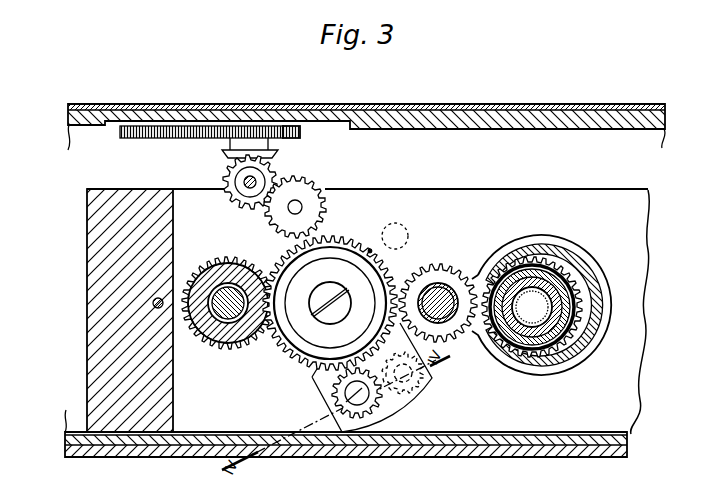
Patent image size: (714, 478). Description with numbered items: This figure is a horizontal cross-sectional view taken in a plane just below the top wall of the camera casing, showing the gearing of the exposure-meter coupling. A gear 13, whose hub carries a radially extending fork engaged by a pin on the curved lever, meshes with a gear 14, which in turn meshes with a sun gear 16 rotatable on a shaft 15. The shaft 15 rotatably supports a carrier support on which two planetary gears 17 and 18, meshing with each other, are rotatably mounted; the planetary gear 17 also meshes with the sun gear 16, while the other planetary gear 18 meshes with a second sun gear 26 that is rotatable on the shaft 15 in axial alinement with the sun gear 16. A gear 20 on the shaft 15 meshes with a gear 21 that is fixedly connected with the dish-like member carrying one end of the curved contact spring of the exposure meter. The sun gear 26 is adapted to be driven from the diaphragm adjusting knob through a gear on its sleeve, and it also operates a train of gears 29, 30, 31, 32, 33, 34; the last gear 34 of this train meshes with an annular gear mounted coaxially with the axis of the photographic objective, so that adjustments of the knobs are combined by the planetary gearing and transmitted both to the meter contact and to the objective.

The gear 13 is at (572, 270).
The gear 14 is at (460, 262).
The shaft 15 is at (298, 348).
The sun gear 16 is at (323, 317).
The planetary gear 17 is at (392, 410).
The planetary gear 18 is at (428, 391).
The gear 20 is at (396, 277).
The gear 21 is at (228, 352).
The sun gear 26 is at (372, 250).
The gear 29 is at (312, 207).
The gear 30 is at (242, 190).
The gear 31 is at (226, 180).
The gear 32 is at (278, 152).
The gear 33 is at (300, 133).
The gear 34 is at (164, 138).